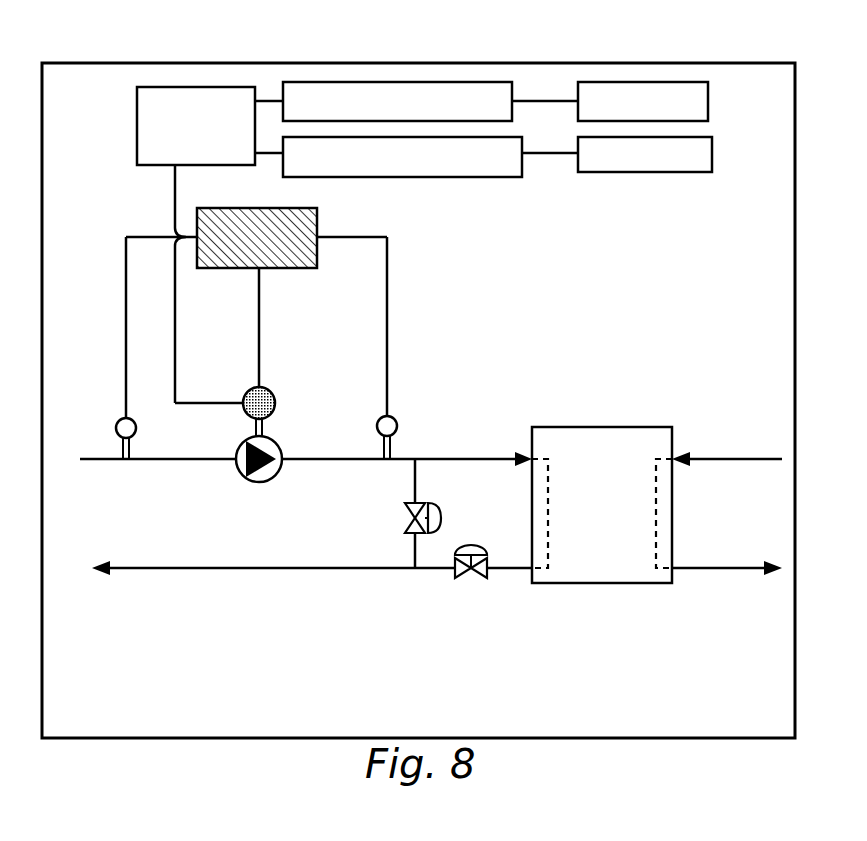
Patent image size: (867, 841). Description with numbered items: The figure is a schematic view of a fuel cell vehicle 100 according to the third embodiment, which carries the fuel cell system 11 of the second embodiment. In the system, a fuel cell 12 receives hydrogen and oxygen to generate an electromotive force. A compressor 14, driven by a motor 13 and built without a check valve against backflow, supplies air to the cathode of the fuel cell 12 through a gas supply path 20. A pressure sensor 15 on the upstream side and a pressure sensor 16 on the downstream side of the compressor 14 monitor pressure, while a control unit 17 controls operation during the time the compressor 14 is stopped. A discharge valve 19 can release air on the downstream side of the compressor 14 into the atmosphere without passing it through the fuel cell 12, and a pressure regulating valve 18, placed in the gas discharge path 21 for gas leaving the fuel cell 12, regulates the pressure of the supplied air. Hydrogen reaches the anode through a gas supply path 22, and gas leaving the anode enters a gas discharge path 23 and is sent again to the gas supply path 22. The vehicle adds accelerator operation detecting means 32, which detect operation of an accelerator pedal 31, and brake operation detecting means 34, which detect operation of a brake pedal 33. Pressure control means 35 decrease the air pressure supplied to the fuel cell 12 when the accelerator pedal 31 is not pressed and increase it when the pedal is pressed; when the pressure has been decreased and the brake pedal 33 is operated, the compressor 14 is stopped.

The fuel cell vehicle 100 is at (627, 62).
The fuel cell system 11 is at (462, 710).
The fuel cell 12 is at (602, 570).
The motor 13 is at (274, 395).
The compressor 14 is at (266, 481).
The pressure sensor 15 is at (116, 429).
The pressure sensor 16 is at (397, 426).
The control unit 17 is at (317, 227).
The pressure regulating valve 18 is at (460, 578).
The discharge valve 19 is at (441, 516).
The gas supply path 20 is at (318, 460).
The gas discharge path 21 is at (517, 575).
The gas supply path 22 is at (736, 459).
The gas discharge path 23 is at (727, 571).
The accelerator pedal 31 is at (708, 105).
The accelerator operation detecting means 32 is at (512, 118).
The brake pedal 33 is at (712, 155).
The brake operation detecting means 34 is at (471, 177).
The pressure control means 35 is at (137, 128).